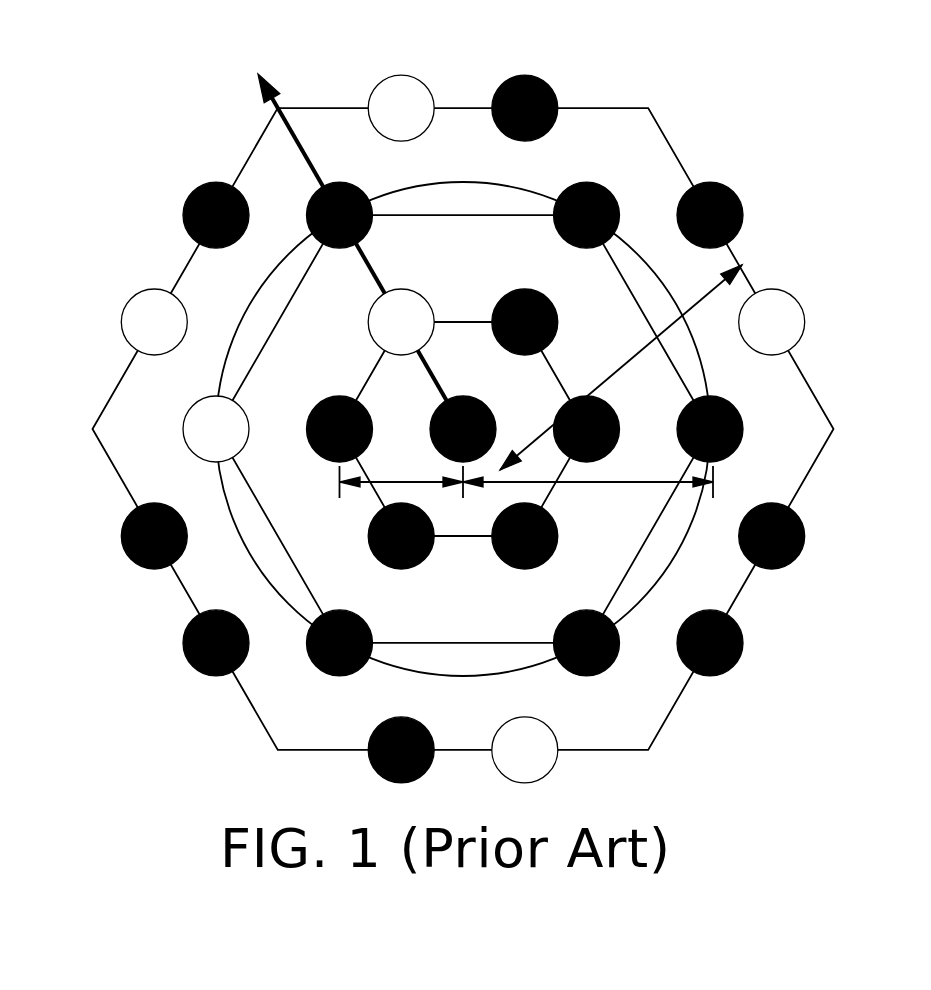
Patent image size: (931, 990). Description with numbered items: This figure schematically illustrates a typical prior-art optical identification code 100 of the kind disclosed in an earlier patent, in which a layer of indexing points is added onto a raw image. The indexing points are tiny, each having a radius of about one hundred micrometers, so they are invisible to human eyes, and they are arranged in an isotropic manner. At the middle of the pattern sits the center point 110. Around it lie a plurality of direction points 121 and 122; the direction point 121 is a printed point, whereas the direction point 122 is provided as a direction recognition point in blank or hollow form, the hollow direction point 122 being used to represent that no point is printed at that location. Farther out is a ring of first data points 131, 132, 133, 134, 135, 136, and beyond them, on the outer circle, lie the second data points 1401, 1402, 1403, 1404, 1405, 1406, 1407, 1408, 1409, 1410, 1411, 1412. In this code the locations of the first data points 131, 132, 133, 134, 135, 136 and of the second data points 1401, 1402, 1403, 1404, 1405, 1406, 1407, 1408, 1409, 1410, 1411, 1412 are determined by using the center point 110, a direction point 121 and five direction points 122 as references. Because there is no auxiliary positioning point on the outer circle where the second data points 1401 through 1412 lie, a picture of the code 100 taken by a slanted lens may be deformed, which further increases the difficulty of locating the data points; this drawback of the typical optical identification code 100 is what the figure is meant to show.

The optical identification code 100 is at (99, 143).
The center point 110 is at (463, 395).
The direction point 121 is at (370, 416).
The direction point 122 is at (430, 285).
The first data point 131 is at (345, 247).
The first data point 132 is at (600, 184).
The first data point 133 is at (680, 422).
The first data point 134 is at (590, 610).
The first data point 135 is at (380, 596).
The first data point 136 is at (268, 410).
The second data point 1401 is at (404, 76).
The second data point 1402 is at (537, 58).
The second data point 1403 is at (752, 183).
The second data point 1404 is at (802, 272).
The second data point 1405 is at (774, 503).
The second data point 1406 is at (716, 610).
The second data point 1407 is at (550, 716).
The second data point 1408 is at (432, 705).
The second data point 1409 is at (230, 593).
The second data point 1410 is at (156, 503).
The second data point 1411 is at (147, 290).
The second data point 1412 is at (213, 173).